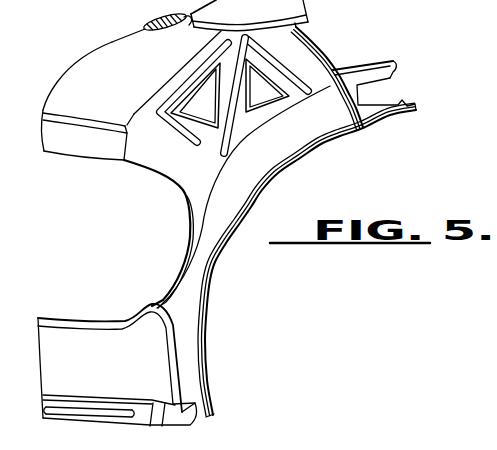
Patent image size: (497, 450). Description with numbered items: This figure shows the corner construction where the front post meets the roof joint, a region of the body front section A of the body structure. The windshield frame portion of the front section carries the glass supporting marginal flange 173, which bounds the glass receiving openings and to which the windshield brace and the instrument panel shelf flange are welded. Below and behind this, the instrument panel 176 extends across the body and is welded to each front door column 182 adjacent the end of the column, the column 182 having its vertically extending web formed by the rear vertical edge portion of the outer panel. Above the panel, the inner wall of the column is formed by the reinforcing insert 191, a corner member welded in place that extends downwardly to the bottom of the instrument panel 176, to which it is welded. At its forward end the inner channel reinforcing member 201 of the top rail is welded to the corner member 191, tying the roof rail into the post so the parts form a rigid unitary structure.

The body front section A is at (102, 53).
The glass supporting marginal flange 173 is at (107, 153).
The reinforcing insert 191 is at (186, 178).
The front door column 182 is at (205, 297).
The instrument panel 176 is at (118, 332).
The inner channel reinforcing member 201 is at (397, 72).